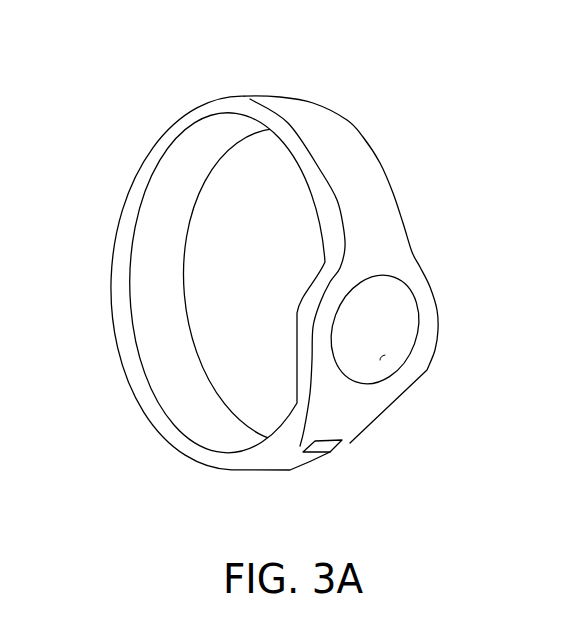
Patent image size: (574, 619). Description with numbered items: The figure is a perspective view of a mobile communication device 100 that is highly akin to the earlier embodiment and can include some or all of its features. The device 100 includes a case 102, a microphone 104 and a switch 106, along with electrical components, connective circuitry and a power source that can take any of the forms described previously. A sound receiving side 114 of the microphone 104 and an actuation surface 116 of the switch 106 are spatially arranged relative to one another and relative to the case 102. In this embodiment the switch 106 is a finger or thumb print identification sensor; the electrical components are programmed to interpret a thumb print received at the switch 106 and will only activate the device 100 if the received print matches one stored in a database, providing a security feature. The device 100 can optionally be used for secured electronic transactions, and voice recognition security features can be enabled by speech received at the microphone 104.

The mobile communication device 100 is at (273, 275).
The case 102 is at (153, 262).
The microphone 104 is at (345, 444).
The switch 106 is at (391, 331).
The sound receiving side 114 is at (318, 453).
The actuation surface 116 is at (380, 360).